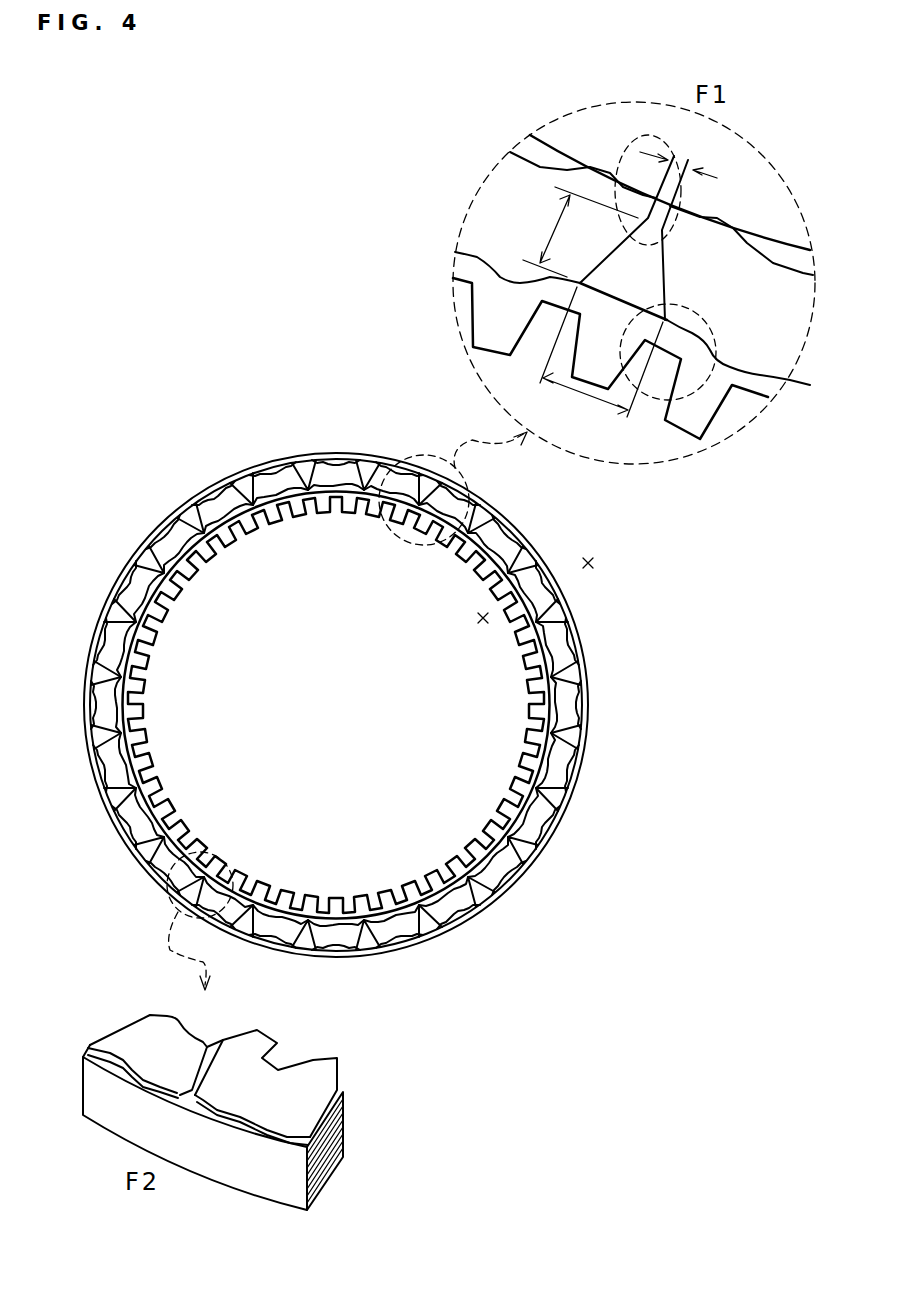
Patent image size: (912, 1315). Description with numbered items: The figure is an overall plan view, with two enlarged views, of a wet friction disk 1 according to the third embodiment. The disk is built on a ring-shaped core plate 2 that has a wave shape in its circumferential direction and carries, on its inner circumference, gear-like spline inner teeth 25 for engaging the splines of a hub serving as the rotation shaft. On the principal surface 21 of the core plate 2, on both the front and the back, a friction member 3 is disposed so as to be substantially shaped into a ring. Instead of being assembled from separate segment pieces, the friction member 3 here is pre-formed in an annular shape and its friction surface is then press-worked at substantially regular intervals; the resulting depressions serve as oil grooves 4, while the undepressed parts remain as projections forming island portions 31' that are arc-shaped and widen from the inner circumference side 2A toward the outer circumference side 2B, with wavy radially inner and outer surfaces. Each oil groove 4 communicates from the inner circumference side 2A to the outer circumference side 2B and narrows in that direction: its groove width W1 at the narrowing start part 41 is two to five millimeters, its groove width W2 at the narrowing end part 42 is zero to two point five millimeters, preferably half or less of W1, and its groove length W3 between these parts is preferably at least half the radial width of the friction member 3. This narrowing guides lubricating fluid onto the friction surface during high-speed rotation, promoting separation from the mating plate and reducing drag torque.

The wet friction disk 1 is at (238, 440).
The core plate 2 is at (588, 674).
The principal surface 21 is at (557, 822).
The spline inner teeth 25 is at (197, 565).
The inner circumference side 2A is at (491, 618).
The outer circumference side 2B is at (597, 563).
The friction member 3 is at (593, 932).
The island portion 31' is at (451, 630).
The oil groove 4 is at (416, 896).
The narrowing start part 41 is at (690, 425).
The narrowing end part 42 is at (633, 137).
The groove width at narrowing start part W1 is at (601, 357).
The groove width at narrowing end part W2 is at (678, 157).
The groove length W3 is at (576, 232).